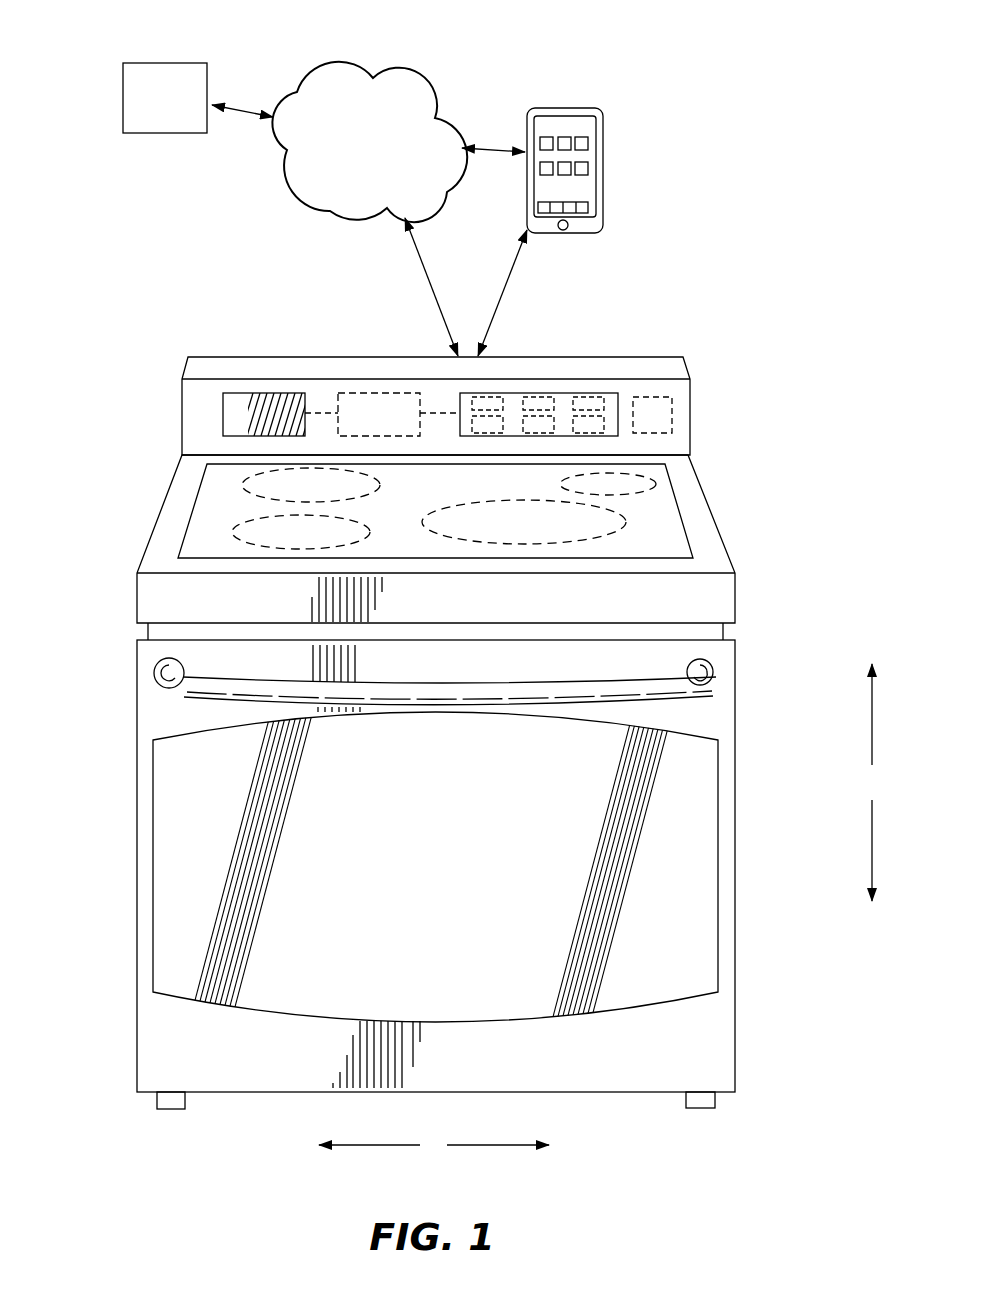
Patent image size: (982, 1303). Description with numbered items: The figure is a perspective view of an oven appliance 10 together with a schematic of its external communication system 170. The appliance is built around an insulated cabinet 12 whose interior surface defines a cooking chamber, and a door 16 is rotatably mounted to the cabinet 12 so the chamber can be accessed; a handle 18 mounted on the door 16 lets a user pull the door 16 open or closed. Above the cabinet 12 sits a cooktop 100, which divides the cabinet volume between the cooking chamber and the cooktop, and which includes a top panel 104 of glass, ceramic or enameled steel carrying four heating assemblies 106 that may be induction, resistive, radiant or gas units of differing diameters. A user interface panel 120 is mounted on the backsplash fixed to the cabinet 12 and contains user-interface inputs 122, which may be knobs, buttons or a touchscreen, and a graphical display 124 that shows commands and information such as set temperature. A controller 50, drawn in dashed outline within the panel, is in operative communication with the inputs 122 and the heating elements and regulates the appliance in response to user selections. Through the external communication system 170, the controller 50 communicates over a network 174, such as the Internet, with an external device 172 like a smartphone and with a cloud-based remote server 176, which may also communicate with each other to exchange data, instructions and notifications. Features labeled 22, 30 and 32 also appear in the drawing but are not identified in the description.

The oven appliance 10 is at (170, 363).
The cabinet 12 is at (148, 632).
The door 16 is at (718, 653).
The handle 18 is at (183, 688).
The door window 22 is at (693, 917).
The cabinet base / bottom 30 is at (760, 1078).
The cooktop 32 is at (748, 593).
The controller 50 is at (372, 392).
The cooktop 100 is at (421, 496).
The top panel 104 is at (198, 537).
The heating assemblies 106 is at (233, 528).
The user interface panel 120 is at (660, 357).
The user-interface inputs 122 is at (530, 392).
The graphical display 124 is at (260, 392).
The external communication system 170 is at (403, 183).
The external device 172 is at (603, 177).
The network 174 is at (346, 157).
The remote server 176 is at (150, 110).